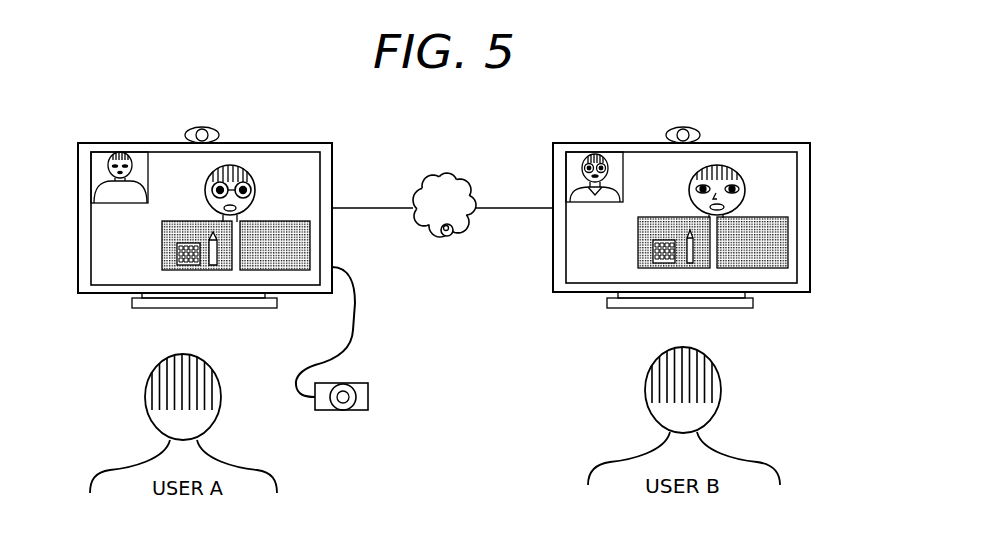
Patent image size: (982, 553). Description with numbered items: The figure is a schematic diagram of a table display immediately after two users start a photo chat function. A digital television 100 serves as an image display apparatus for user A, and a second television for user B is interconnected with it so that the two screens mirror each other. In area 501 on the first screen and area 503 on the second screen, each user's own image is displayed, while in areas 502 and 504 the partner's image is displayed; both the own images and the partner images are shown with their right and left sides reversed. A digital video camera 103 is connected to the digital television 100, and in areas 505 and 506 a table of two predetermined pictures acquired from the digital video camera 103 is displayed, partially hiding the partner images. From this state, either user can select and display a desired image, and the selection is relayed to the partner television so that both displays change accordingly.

The digital television 100 is at (142, 308).
The digital video camera 103 is at (369, 397).
The own image area 501 is at (102, 156).
The partner image area 502 is at (257, 177).
The own image area 503 is at (575, 153).
The partner image area 504 is at (737, 170).
The table display area 505 is at (162, 241).
The table display area 506 is at (310, 242).